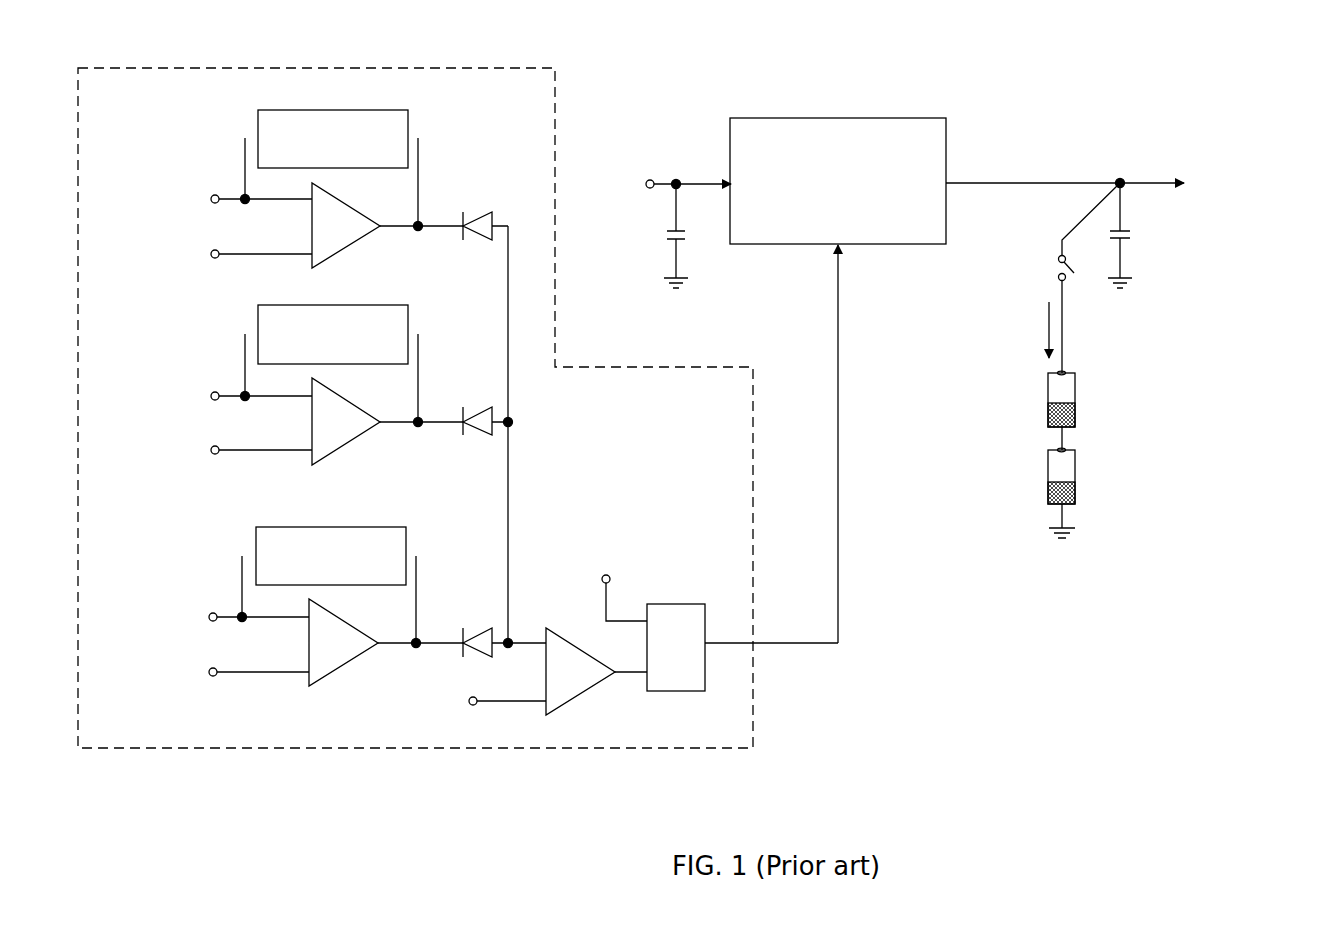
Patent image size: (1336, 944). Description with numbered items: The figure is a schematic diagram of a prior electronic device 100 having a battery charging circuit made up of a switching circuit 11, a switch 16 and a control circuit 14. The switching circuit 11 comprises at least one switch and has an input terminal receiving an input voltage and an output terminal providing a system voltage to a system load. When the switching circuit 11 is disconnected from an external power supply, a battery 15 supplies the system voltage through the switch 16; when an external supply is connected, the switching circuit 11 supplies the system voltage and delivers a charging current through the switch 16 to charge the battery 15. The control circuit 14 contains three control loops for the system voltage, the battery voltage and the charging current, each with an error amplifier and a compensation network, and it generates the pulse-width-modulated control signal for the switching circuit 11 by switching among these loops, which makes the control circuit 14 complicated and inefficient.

The electronic device 100 is at (1126, 52).
The switching circuit 11 is at (826, 210).
The control circuit 14 is at (658, 447).
The battery 15 is at (1040, 436).
The switch 16 is at (1046, 266).